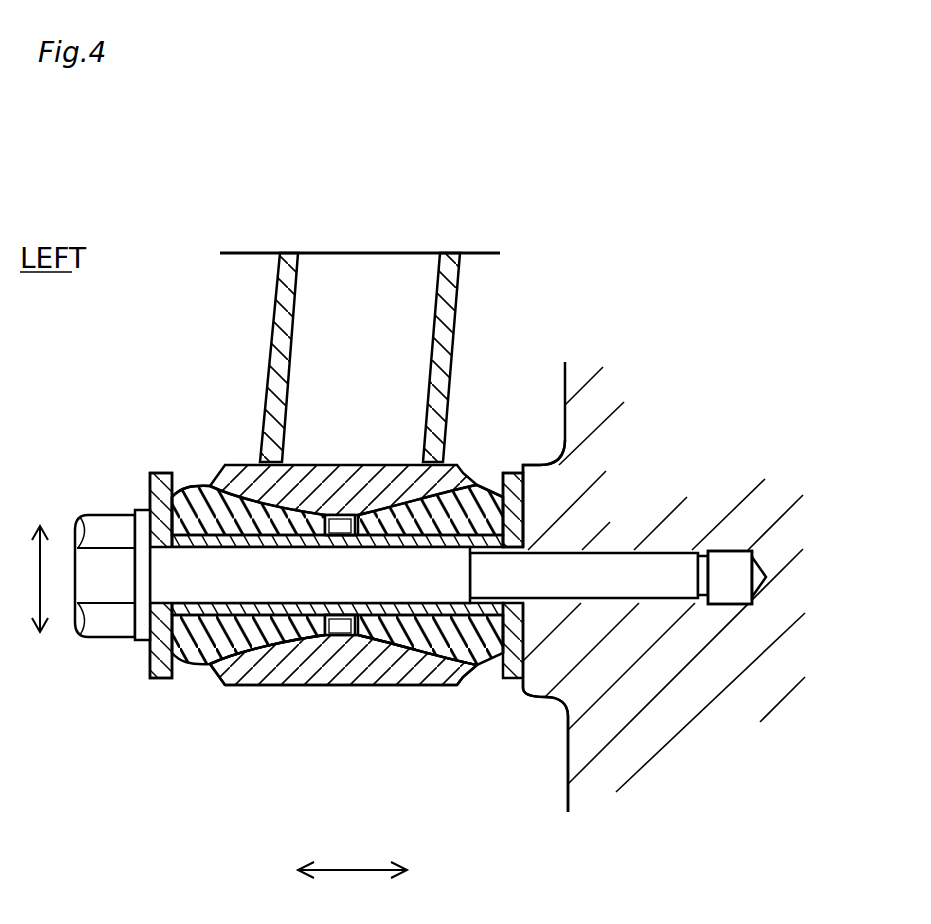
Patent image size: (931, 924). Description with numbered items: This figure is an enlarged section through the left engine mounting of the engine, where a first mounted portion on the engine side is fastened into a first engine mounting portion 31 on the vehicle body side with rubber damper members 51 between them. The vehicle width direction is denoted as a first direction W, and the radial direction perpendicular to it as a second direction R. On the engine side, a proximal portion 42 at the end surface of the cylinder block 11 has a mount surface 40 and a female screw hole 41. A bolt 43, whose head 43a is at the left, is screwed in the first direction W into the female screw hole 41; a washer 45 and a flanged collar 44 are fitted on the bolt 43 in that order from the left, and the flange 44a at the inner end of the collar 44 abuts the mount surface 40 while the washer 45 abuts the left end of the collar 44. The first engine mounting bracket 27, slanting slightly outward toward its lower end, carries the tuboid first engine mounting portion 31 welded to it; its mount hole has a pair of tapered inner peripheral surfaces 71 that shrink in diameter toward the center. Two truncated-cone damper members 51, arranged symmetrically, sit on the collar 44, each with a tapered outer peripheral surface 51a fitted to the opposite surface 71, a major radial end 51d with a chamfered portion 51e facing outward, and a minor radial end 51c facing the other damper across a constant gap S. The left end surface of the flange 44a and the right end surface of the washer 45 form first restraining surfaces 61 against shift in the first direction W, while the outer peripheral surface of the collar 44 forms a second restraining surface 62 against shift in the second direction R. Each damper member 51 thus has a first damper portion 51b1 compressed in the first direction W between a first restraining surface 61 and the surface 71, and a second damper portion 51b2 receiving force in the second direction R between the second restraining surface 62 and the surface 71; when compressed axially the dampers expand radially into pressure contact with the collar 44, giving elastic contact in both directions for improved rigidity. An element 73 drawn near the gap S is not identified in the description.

The cylinder block 11 is at (695, 447).
The first engine mounting bracket 27 is at (280, 292).
The first engine mounting portion 31 is at (343, 460).
The mount surface 40 is at (522, 464).
The female screw hole 41 is at (616, 602).
The proximal portion 42 is at (550, 682).
The bolt 43 is at (560, 574).
The head 43a is at (103, 565).
The flanged collar 44 is at (200, 548).
The flange 44a is at (518, 520).
The washer 45 is at (160, 472).
The damper member 51 is at (258, 508).
The tapered outer peripheral surface 51a is at (205, 666).
The first damper portion 51b1 is at (245, 645).
The second damper portion 51b2 is at (228, 628).
The minor radial end 51c is at (330, 540).
The major radial end 51d is at (148, 643).
The chamfered portion 51e is at (182, 490).
The first restraining surface 61 is at (152, 478).
The second restraining surface 62 is at (343, 605).
The tapered inner peripheral surface 71 is at (284, 502).
The projection 73 is at (333, 640).
The gap S is at (338, 638).
The second direction R is at (30, 579).
The first direction W is at (352, 885).